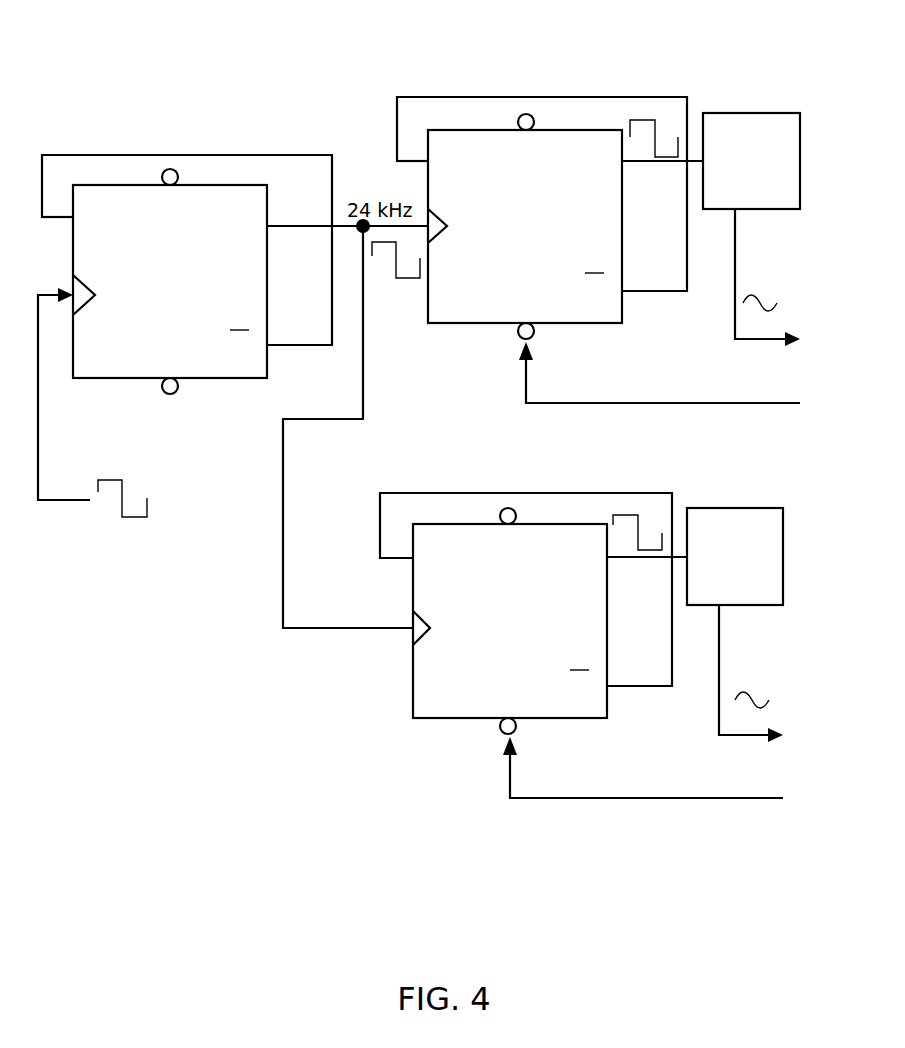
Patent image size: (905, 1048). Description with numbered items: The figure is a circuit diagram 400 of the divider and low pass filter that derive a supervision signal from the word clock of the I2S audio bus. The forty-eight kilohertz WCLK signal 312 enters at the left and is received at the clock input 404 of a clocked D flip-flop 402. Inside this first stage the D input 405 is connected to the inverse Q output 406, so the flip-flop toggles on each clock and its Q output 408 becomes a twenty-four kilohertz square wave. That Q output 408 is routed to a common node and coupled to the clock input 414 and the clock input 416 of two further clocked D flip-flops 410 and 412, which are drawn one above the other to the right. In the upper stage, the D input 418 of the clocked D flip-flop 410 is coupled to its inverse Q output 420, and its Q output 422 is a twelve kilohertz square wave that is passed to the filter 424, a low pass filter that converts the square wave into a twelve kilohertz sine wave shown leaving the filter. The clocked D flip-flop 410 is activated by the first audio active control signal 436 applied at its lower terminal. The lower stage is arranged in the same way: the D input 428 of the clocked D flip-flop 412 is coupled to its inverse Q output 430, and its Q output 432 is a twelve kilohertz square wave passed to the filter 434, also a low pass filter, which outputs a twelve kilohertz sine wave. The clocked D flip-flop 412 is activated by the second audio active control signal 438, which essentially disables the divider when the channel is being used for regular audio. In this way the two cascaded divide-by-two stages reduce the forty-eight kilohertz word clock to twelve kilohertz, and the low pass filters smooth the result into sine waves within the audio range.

The circuit diagram 400 is at (636, 59).
The clocked D flip-flop 402 is at (145, 323).
The clock input 404 is at (91, 296).
The D input 405 is at (101, 214).
The inverse Q output 406 is at (236, 355).
The Q output 408 is at (236, 228).
The clocked D flip-flop 410 is at (495, 264).
The clocked D flip-flop 412 is at (480, 663).
The clock input 414 is at (446, 228).
The clock input 416 is at (429, 627).
The D input 418 is at (455, 156).
The inverse Q output 420 is at (588, 296).
The Q output 422 is at (590, 170).
The filter 424 is at (735, 201).
The D input 428 is at (440, 553).
The inverse Q output 430 is at (570, 694).
The Q output 432 is at (573, 567).
The filter 434 is at (718, 594).
The audio active 1 control signal 436 is at (542, 401).
The audio active 2 control signal 438 is at (527, 797).
The 48 kHz WCLK signal 312 is at (39, 468).